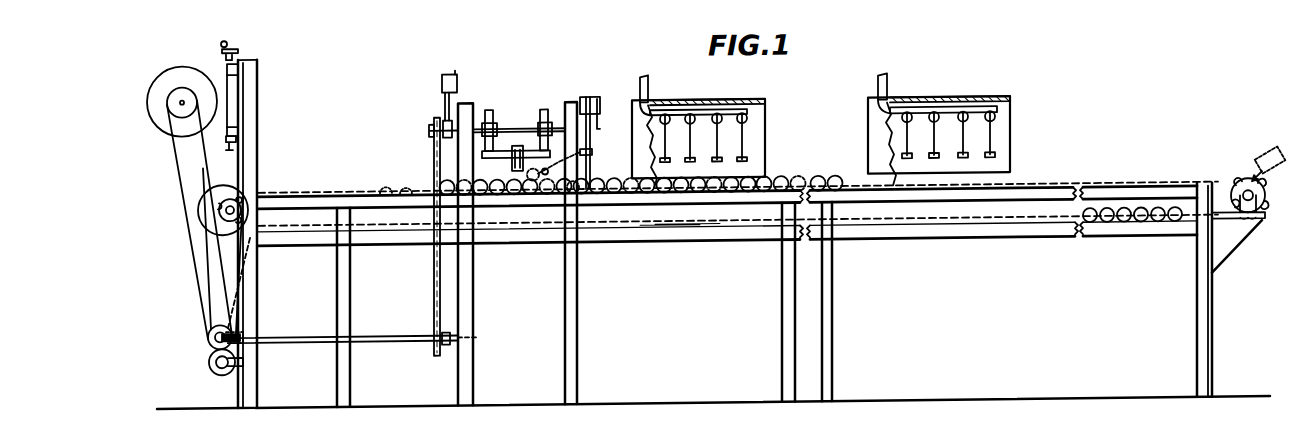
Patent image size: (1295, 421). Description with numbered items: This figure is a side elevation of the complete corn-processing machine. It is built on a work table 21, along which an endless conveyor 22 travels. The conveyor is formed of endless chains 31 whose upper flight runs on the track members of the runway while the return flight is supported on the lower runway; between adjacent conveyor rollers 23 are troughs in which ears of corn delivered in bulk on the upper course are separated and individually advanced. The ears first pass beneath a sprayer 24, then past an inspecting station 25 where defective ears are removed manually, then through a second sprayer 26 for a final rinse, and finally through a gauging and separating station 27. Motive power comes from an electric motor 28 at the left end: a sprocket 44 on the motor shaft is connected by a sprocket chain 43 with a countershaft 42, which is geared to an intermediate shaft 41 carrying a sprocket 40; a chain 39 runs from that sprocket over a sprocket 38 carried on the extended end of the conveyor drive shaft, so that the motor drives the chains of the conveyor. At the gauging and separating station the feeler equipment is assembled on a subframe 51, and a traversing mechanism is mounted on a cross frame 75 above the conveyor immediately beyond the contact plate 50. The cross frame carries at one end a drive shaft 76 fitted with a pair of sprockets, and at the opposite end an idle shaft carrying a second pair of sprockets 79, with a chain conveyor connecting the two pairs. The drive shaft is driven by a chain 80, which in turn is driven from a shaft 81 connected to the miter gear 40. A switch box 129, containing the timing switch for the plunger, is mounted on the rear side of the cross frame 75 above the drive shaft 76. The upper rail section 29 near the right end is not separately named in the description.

The work table 21 is at (1196, 270).
The endless conveyor 22 is at (1122, 229).
The conveyor rollers 23 is at (1075, 239).
The sprayer 24 is at (980, 124).
The inspecting station 25 is at (800, 196).
The second sprayer 26 is at (705, 103).
The gauging and separating station 27 is at (526, 141).
The electric motor 28 is at (180, 81).
The upper rail section 29 is at (1130, 200).
The endless chains 31 is at (940, 238).
The sprocket 38 is at (248, 182).
The chain 39 is at (203, 254).
The sprocket 40 is at (212, 328).
The intermediate shaft 41 is at (205, 342).
The countershaft 42 is at (212, 364).
The sprocket chain 43 is at (178, 182).
The sprocket 44 is at (172, 104).
The contact plate 50 is at (560, 200).
The subframe 51 is at (590, 168).
The cross frame 75 is at (578, 272).
The drive shaft 76 is at (500, 122).
The sprockets 79 is at (546, 110).
The chain 80 is at (433, 293).
The shaft 81 is at (383, 342).
The switch box 129 is at (440, 84).